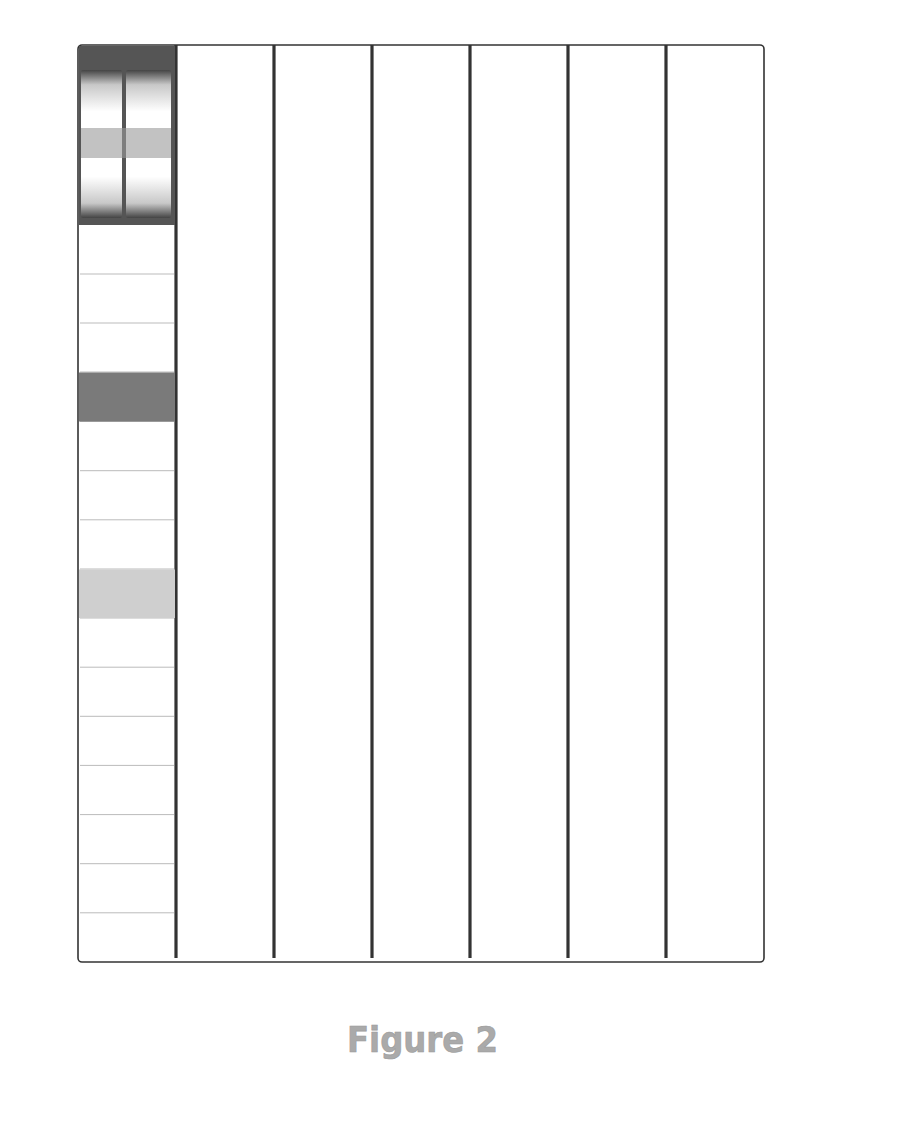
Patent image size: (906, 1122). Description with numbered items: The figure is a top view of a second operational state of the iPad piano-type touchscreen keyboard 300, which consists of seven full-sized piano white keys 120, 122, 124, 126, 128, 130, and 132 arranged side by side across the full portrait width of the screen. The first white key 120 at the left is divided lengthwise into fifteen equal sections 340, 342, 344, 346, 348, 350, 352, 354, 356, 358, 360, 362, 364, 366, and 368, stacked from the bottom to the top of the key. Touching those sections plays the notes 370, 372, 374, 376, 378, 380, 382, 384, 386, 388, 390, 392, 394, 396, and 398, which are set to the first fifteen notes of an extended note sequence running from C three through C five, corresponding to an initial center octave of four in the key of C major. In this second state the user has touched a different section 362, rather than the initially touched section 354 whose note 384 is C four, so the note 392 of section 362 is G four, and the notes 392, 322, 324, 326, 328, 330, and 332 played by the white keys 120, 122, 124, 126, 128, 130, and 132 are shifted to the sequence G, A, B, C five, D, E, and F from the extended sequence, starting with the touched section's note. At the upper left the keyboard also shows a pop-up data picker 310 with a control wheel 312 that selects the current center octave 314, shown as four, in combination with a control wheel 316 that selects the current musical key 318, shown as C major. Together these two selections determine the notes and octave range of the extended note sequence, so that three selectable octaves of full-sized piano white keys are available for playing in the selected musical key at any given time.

The touchscreen keyboard 300 is at (442, 503).
The pop-up data picker 310 is at (125, 123).
The control wheel 312 is at (103, 115).
The current center octave 314 is at (102, 143).
The control wheel 316 is at (151, 115).
The current musical key 318 is at (172, 143).
The first white key 120 is at (127, 525).
The white key 122 is at (225, 525).
The white key 124 is at (323, 525).
The white key 126 is at (421, 525).
The white key 128 is at (519, 525).
The white key 130 is at (617, 525).
The white key 132 is at (715, 525).
The note 322 is at (224, 84).
The note 324 is at (322, 84).
The note 326 is at (420, 84).
The note 328 is at (518, 84).
The note 330 is at (617, 84).
The note 332 is at (715, 84).
The section 340 is at (101, 936).
The section 342 is at (83, 887).
The section 344 is at (83, 838).
The section 346 is at (82, 789).
The section 348 is at (83, 740).
The section 350 is at (83, 691).
The section 352 is at (83, 642).
The section 354 is at (104, 594).
The section 356 is at (83, 543).
The section 358 is at (83, 494).
The section 360 is at (82, 445).
The section 362 is at (104, 397).
The section 364 is at (83, 347).
The section 366 is at (83, 298).
The section 368 is at (101, 249).
The note 370 is at (225, 936).
The note 372 is at (225, 887).
The note 374 is at (225, 838).
The note 376 is at (225, 789).
The note 378 is at (225, 740).
The note 380 is at (225, 691).
The note 382 is at (225, 642).
The note 384 is at (225, 593).
The note 386 is at (225, 543).
The note 388 is at (225, 494).
The note 390 is at (225, 445).
The note 392 is at (225, 396).
The note 394 is at (225, 347).
The note 396 is at (225, 298).
The note 398 is at (225, 249).